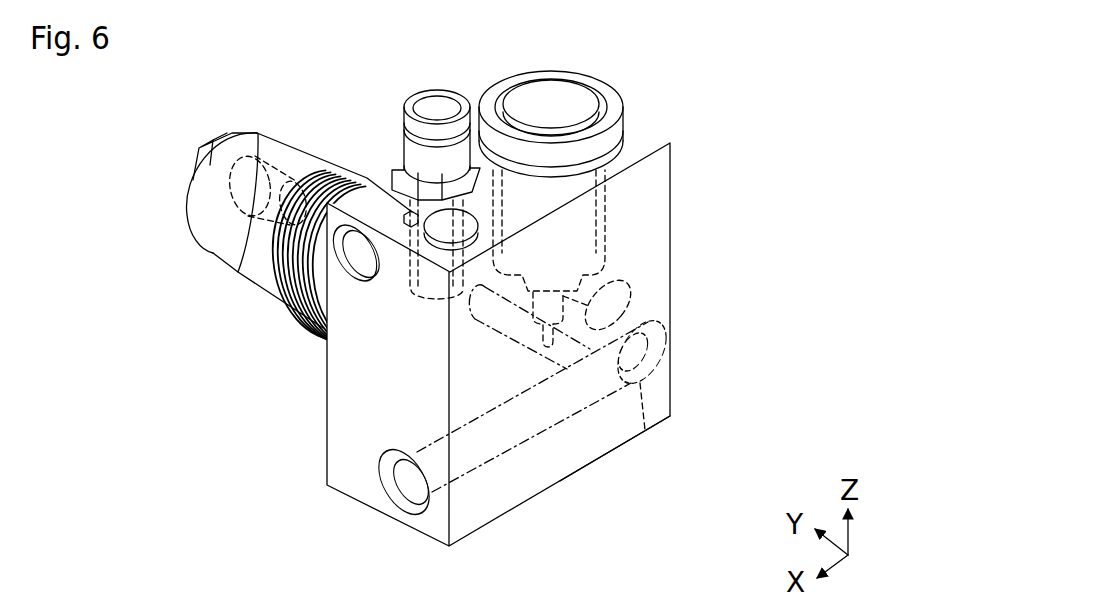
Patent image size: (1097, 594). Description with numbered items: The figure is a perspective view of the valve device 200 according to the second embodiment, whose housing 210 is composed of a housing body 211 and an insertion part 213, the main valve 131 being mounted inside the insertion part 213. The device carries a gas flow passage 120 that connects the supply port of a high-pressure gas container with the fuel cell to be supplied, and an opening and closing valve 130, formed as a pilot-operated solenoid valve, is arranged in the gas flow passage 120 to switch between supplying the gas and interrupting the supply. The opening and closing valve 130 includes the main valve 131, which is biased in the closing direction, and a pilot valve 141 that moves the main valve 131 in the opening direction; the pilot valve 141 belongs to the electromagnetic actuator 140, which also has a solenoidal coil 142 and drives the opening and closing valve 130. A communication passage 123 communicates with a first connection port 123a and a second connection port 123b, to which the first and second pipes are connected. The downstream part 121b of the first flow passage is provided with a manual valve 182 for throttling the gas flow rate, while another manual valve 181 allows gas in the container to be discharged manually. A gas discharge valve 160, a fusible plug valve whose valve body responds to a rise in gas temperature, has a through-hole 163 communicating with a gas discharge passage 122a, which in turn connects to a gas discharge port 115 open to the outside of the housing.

The valve device 200 is at (207, 87).
The gas discharge port 115 is at (370, 262).
The gas flow passage 120 is at (505, 355).
The downstream part of the first flow passage 121b is at (548, 332).
The gas discharge passage 122a is at (378, 240).
The communication passage 123 is at (537, 410).
The first connection port 123a is at (664, 358).
The second connection port 123b is at (417, 490).
The opening and closing valve 130 is at (104, 226).
The main valve 131 is at (295, 216).
The electromagnetic actuator 140 is at (630, 133).
The pilot valve 141 is at (645, 419).
The solenoidal coil 142 is at (590, 212).
The gas discharge valve 160 is at (464, 96).
The through-hole 163 is at (406, 211).
The manual valve 181 is at (473, 224).
The manual valve 182 is at (626, 299).
The housing 210 is at (130, 303).
The housing body 211 is at (340, 396).
The insertion part 213 is at (222, 248).